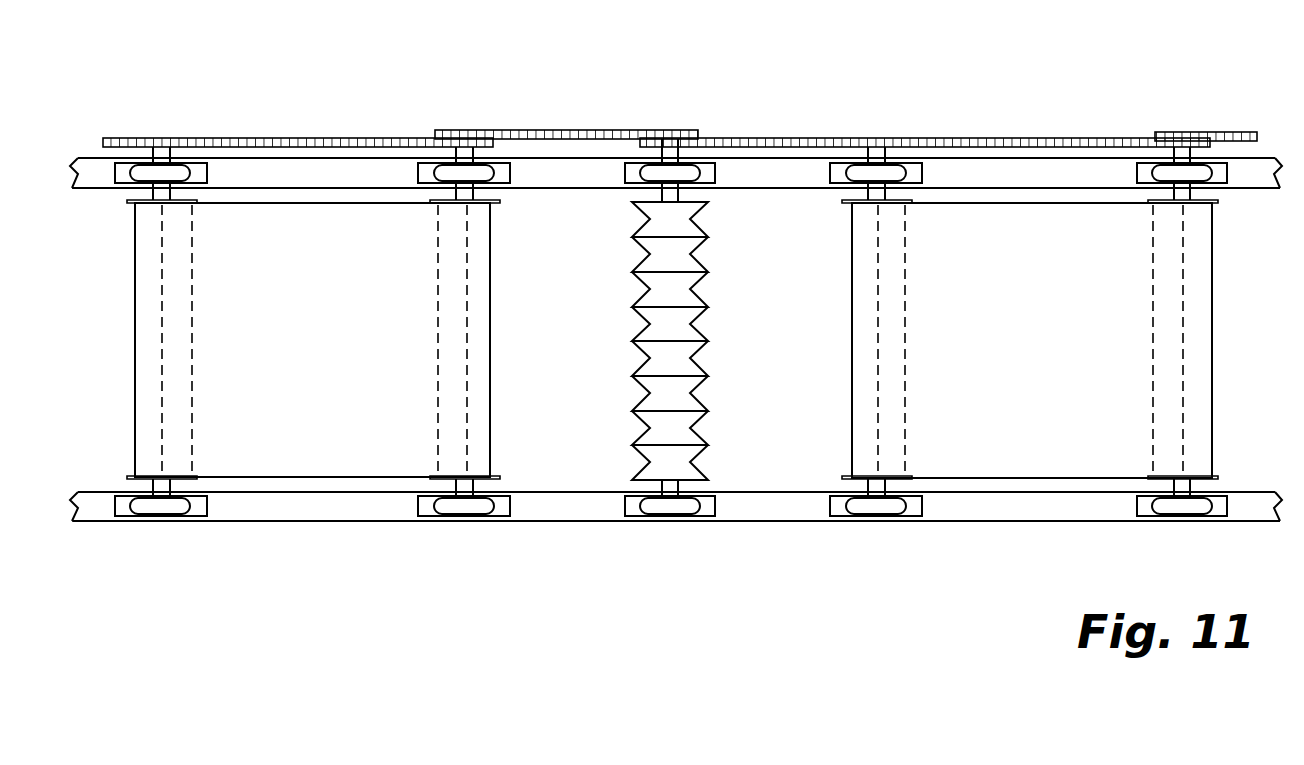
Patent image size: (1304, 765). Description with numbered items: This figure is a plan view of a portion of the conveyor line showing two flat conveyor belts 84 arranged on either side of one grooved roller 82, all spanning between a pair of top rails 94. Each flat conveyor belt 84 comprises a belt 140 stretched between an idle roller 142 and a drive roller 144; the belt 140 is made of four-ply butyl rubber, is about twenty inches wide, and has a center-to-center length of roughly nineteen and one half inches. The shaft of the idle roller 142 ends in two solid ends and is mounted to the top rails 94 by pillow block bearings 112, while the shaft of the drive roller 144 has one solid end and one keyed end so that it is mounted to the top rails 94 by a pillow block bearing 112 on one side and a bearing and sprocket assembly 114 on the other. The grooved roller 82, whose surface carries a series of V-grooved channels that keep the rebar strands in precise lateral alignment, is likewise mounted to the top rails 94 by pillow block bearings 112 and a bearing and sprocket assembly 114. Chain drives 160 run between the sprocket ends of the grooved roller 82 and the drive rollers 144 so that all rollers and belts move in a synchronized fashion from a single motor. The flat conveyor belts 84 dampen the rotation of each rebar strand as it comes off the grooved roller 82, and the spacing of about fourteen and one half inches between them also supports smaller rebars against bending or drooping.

The grooved roller assembly 82 is at (675, 525).
The flat conveyor belt 84 is at (322, 420).
The top rails 94 is at (100, 178).
The pillow block bearing 112 is at (1147, 182).
The bearing and sprocket assembly 114 is at (468, 130).
The belt 140 is at (315, 317).
The idle roller 142 is at (155, 283).
The drive roller 144 is at (478, 365).
The chain drive 160 is at (203, 140).